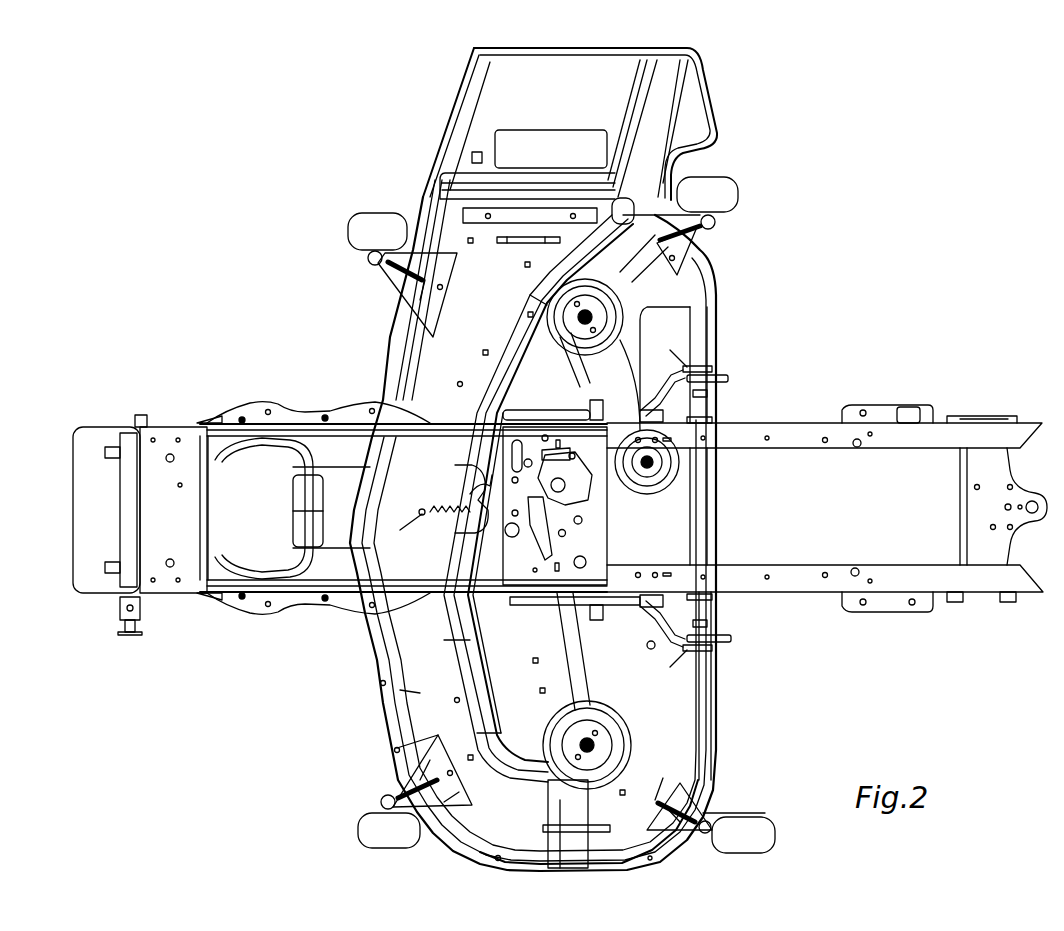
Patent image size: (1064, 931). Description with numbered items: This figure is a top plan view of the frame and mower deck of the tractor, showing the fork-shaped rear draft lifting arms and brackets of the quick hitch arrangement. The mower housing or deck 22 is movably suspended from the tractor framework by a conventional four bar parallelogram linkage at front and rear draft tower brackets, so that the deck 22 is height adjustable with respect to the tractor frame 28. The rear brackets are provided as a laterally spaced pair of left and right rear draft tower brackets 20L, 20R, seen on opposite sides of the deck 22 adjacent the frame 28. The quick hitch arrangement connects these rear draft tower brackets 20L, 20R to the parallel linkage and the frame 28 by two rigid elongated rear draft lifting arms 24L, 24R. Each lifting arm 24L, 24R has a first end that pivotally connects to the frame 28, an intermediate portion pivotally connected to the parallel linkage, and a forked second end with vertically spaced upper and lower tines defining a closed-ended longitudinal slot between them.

The housing or deck 22 is at (495, 304).
The frame 28 is at (763, 423).
The right rear draft tower bracket 20R is at (745, 345).
The left rear draft tower bracket 20L is at (745, 620).
The right rear draft lifting arm 24R is at (728, 377).
The left rear draft lifting arm 24L is at (731, 639).